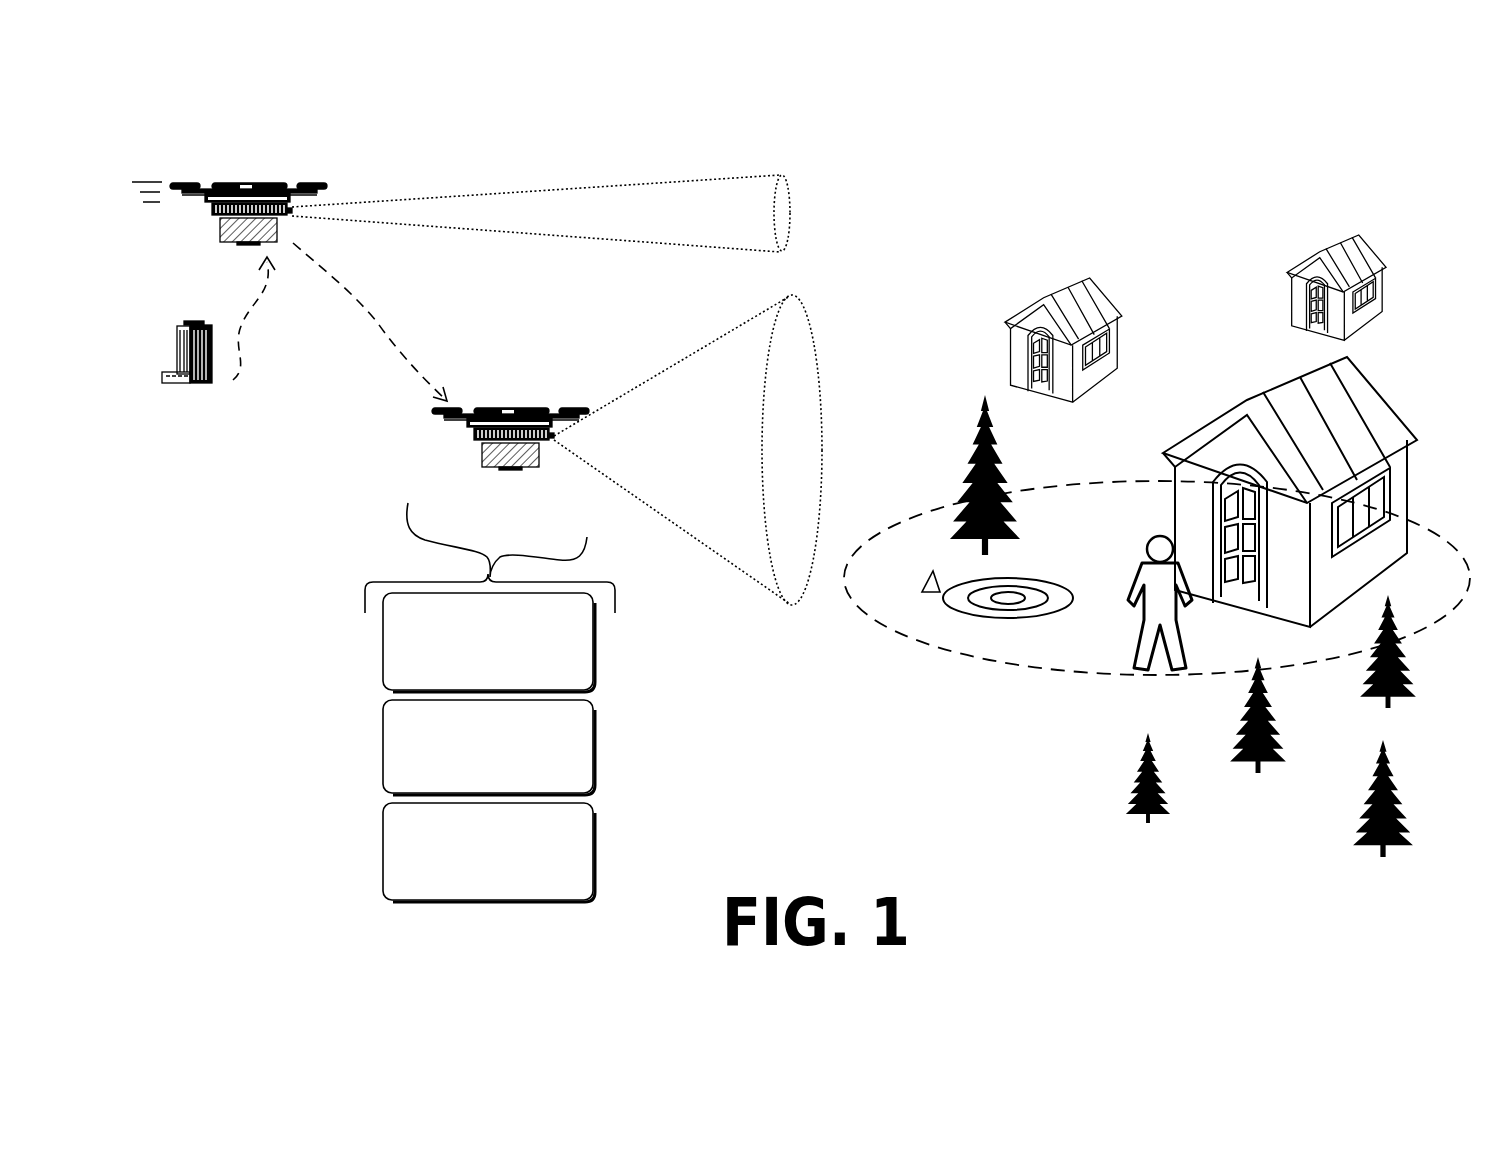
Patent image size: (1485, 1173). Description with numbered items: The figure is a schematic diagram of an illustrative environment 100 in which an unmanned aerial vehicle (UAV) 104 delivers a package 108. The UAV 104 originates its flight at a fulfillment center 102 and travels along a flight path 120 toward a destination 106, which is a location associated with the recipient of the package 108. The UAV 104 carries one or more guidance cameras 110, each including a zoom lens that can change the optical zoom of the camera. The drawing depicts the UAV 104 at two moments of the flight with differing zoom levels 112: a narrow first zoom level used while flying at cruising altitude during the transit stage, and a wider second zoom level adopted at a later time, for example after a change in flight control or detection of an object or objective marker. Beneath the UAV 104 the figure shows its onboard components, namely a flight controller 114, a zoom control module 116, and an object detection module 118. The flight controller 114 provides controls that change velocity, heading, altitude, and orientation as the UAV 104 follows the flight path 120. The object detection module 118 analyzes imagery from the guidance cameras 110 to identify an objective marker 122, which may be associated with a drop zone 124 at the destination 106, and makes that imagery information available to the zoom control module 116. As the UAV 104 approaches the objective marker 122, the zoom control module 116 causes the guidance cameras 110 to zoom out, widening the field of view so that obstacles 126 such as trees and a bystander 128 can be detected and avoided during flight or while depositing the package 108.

The environment 100 is at (1257, 150).
The fulfillment center 102 is at (201, 346).
The unmanned aerial vehicle 104 is at (203, 193).
The destination 106 is at (1130, 480).
The package 108 is at (220, 223).
The guidance camera 110 is at (292, 216).
The zoom level 112 is at (878, 150).
The flight controller 114 is at (489, 642).
The zoom control module 116 is at (489, 747).
The object detection module 118 is at (489, 852).
The flight path 120 is at (377, 322).
The objective marker 122 is at (924, 588).
The drop zone 124 is at (1005, 618).
The obstacles 126 is at (950, 487).
The bystander 128 is at (1138, 670).